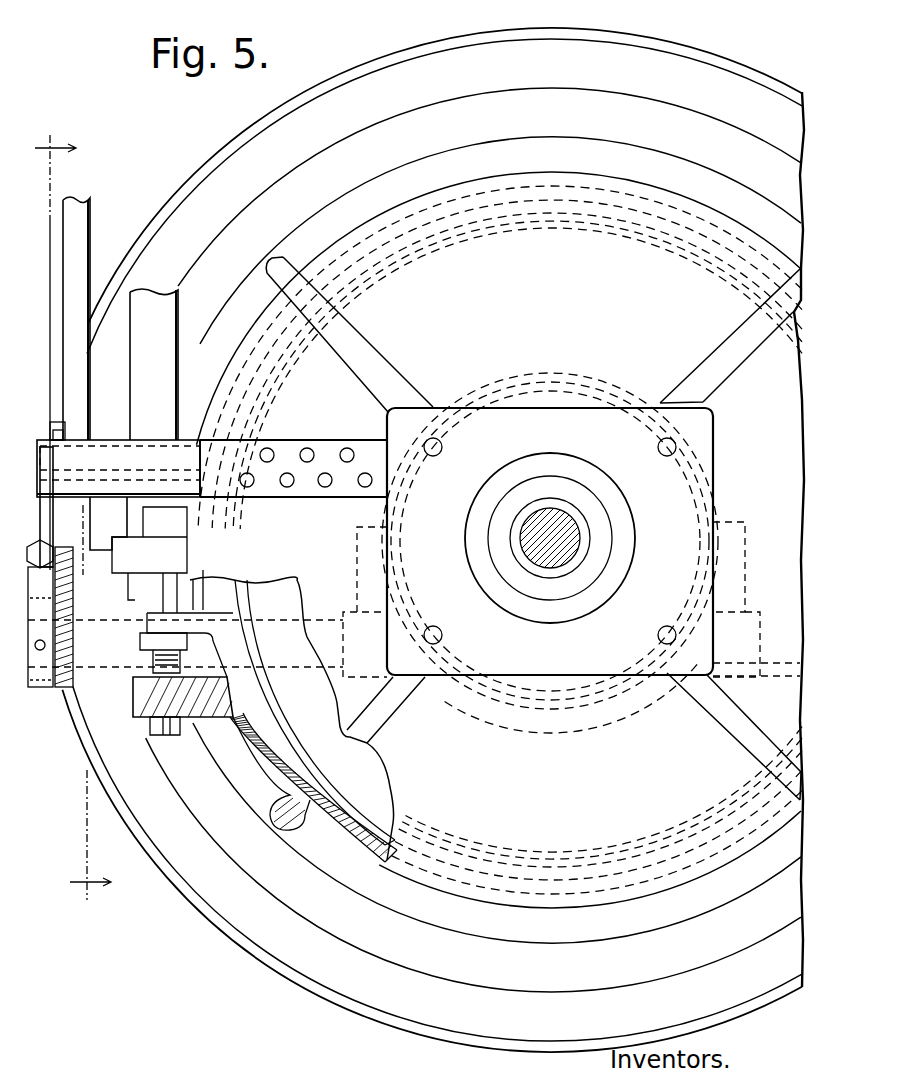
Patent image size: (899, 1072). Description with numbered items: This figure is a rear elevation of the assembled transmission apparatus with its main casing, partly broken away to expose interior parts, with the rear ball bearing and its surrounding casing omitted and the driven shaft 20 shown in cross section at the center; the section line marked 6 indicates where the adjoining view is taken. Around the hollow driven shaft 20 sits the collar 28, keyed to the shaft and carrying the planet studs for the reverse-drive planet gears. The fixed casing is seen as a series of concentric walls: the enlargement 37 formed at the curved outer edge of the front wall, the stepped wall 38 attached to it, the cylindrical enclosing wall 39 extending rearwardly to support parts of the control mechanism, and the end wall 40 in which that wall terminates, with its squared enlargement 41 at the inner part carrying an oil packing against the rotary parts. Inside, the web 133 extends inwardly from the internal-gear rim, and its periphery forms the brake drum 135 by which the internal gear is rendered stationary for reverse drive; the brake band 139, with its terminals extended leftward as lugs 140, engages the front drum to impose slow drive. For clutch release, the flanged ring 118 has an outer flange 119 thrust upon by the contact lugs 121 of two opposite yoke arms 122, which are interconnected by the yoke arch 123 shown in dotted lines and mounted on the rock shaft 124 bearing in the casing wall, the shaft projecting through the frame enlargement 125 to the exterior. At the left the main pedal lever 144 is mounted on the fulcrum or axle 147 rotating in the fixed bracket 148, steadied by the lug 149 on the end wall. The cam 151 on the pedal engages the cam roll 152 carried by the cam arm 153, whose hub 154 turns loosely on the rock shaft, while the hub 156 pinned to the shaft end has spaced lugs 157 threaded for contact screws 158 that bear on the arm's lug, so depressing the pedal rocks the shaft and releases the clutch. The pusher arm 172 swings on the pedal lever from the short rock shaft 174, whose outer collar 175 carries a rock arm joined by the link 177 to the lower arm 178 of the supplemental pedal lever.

The enlargement 37 is at (540, 26).
The stepped wall 38 is at (437, 540).
The cylindrical enclosing wall 39 is at (497, 540).
The end wall 40 is at (499, 540).
The squared enlargement 41 is at (550, 541).
The collar 28 is at (520, 511).
The driven shaft 20 is at (560, 532).
The flanged ring 118 is at (514, 378).
The outer flange 119 is at (464, 392).
The contact lugs 121 is at (398, 540).
The yoke arms 122 is at (742, 548).
The yoke arch 123 is at (546, 733).
The rock shaft 124 is at (770, 632).
The frame enlargement 125 is at (97, 696).
The web 133 is at (292, 718).
The brake drum 135 is at (243, 600).
The brake band 139 is at (338, 835).
The lugs 140 is at (210, 713).
The main pedal lever 144 is at (92, 216).
The fulcrum or axle 147 is at (160, 450).
The fixed bracket 148 is at (154, 364).
The lug 149 is at (330, 447).
The cam 151 is at (48, 506).
The cam roll 152 is at (64, 548).
The cam arm 153 is at (70, 614).
The hub 154 is at (63, 690).
The hub 156 is at (40, 691).
The lugs 157 is at (72, 592).
The contact screw 158 is at (36, 542).
The pusher arm 172 is at (108, 523).
The short rock shaft 174 is at (105, 460).
The collar 175 is at (54, 434).
The link 177 is at (52, 420).
The lower arm 178 is at (52, 327).
The section line 6 is at (73, 518).